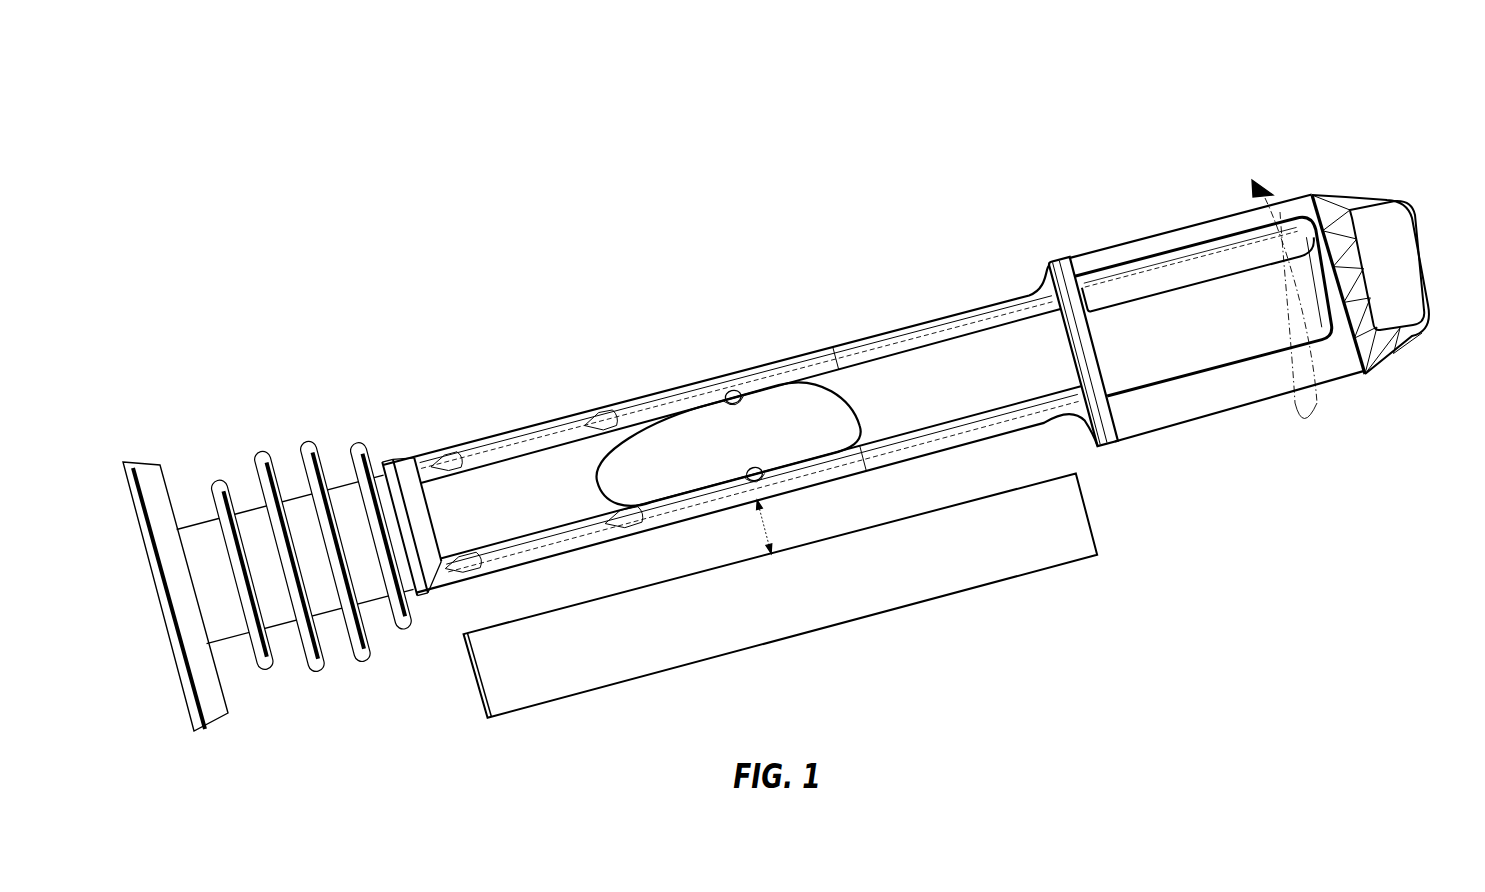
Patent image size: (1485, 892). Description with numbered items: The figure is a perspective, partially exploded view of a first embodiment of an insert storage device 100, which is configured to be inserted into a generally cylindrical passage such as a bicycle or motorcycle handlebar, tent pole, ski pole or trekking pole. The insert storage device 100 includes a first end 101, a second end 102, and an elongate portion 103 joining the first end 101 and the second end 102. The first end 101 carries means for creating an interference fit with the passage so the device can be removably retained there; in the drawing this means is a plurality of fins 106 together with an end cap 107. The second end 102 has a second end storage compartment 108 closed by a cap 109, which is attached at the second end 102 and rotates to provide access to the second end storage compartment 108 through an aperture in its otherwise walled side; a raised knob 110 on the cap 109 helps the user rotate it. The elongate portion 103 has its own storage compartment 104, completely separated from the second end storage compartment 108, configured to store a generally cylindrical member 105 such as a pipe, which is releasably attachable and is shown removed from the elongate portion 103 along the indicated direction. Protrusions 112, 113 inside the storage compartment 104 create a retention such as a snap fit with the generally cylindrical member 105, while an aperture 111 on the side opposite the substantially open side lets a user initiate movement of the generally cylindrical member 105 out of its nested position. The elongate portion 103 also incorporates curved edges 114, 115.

The insert storage device 100 is at (152, 135).
The first end 101 is at (269, 499).
The second end 102 is at (1208, 270).
The elongate portion 103 is at (737, 401).
The storage compartment 104 is at (880, 402).
The generally cylindrical member 105 is at (478, 718).
The fins 106 is at (402, 632).
The end cap 107 is at (208, 704).
The second end storage compartment 108 is at (1127, 357).
The cap 109 is at (1250, 376).
The raised knob 110 is at (1390, 233).
The aperture 111 is at (660, 460).
The protrusion 112 is at (762, 470).
The protrusion 113 is at (737, 393).
The curved edge 114 is at (553, 543).
The curved edge 115 is at (527, 443).